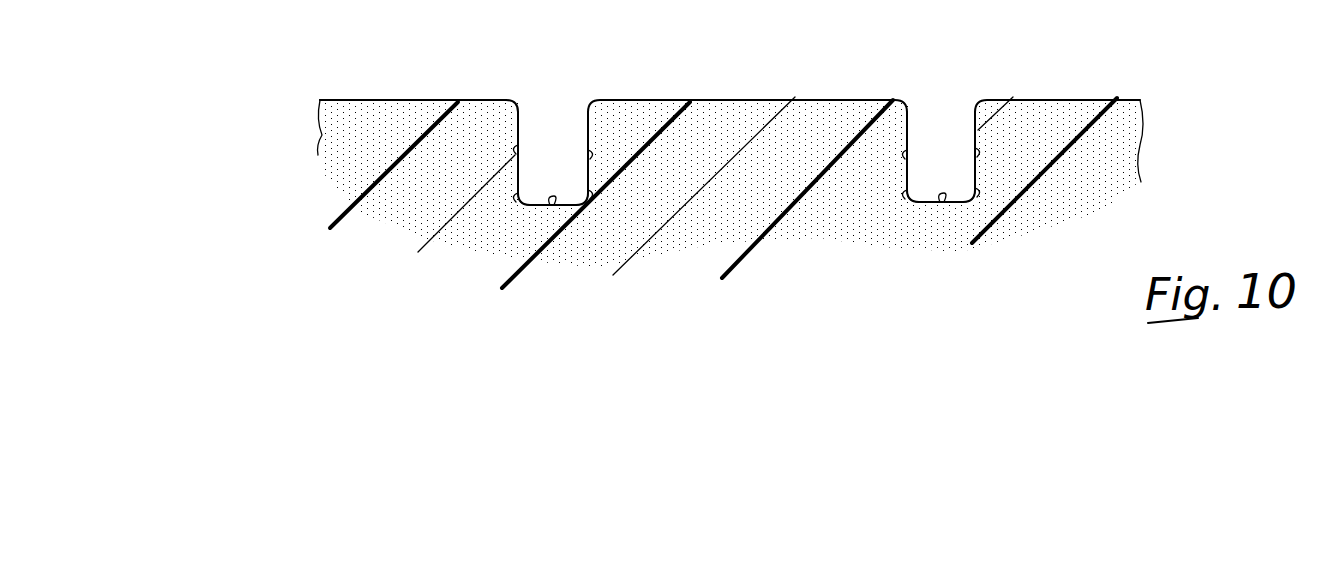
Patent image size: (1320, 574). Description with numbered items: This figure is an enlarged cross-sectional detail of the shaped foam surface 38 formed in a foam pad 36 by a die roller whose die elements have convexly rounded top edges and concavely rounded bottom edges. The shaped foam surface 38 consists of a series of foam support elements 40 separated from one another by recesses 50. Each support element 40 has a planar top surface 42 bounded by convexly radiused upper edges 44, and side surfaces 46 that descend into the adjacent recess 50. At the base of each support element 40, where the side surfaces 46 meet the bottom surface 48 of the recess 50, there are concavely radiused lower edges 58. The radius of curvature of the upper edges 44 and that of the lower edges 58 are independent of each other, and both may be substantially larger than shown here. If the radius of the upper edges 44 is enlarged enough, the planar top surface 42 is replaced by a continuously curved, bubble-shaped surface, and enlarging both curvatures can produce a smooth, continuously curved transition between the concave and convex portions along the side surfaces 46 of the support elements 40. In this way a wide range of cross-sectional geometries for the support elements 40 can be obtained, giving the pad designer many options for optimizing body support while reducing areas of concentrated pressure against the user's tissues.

The foam pad 36 is at (300, 190).
The shaped foam surface 38 is at (340, 78).
The foam support element 40 is at (395, 108).
The planar top surface 42 is at (423, 100).
The upper edge 44 is at (601, 106).
The side surface 46 is at (517, 150).
The bottom surface 48 is at (562, 206).
The recess 50 is at (556, 150).
The lower edge 58 is at (513, 190).